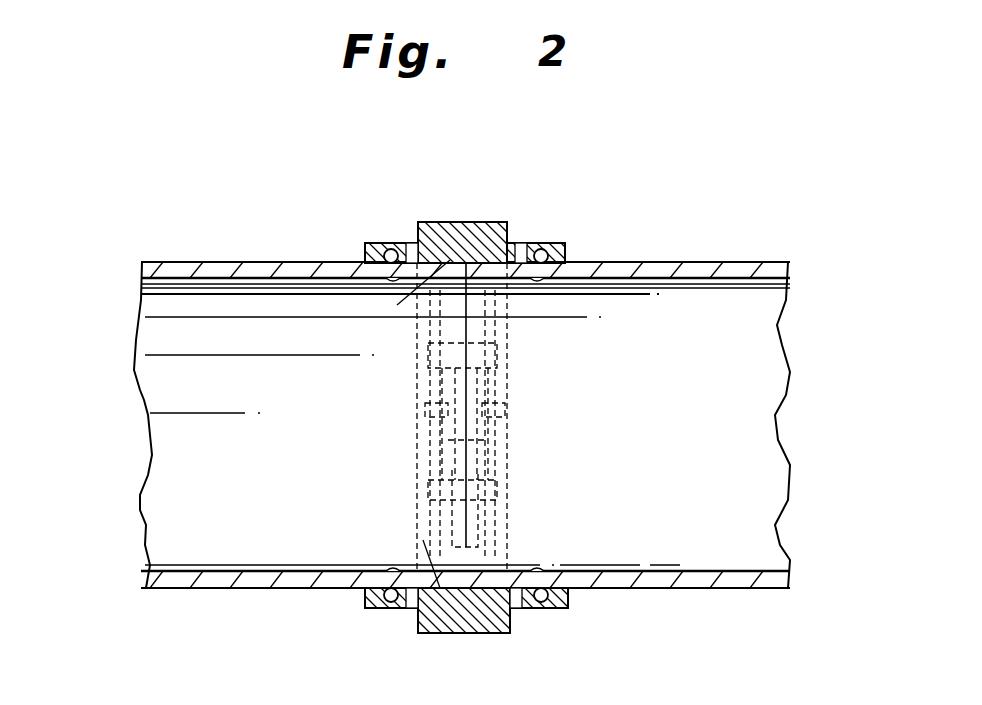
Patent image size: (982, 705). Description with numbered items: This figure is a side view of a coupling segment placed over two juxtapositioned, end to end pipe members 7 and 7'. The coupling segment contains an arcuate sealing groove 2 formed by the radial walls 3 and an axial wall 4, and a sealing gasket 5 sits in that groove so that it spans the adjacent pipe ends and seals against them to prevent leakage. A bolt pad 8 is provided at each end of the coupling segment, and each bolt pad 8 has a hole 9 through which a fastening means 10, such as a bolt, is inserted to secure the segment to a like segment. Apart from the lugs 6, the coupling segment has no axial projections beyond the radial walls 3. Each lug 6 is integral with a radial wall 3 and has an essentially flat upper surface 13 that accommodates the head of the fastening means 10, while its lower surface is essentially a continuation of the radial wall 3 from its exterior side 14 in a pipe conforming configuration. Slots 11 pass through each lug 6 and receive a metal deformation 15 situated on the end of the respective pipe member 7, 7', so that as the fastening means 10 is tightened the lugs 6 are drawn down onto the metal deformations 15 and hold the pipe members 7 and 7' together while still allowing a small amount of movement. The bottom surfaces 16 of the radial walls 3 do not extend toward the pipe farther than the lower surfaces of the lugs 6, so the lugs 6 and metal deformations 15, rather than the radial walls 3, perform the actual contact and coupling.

The sealing groove 2 is at (474, 554).
The radial walls 3 is at (508, 340).
The axial wall 4 is at (397, 305).
The sealing gasket 5 is at (470, 222).
The lug 6 is at (362, 257).
The pipe member 7 is at (431, 425).
The pipe member 7' is at (811, 425).
The bolt pad 8 is at (500, 440).
The hole 9 is at (440, 455).
The fastening means 10 is at (425, 407).
The slots 11 is at (395, 248).
The upper surface 13 is at (370, 244).
The exterior side 14 is at (520, 245).
The metal deformation 15 is at (391, 249).
The bottom surfaces 16 is at (527, 283).